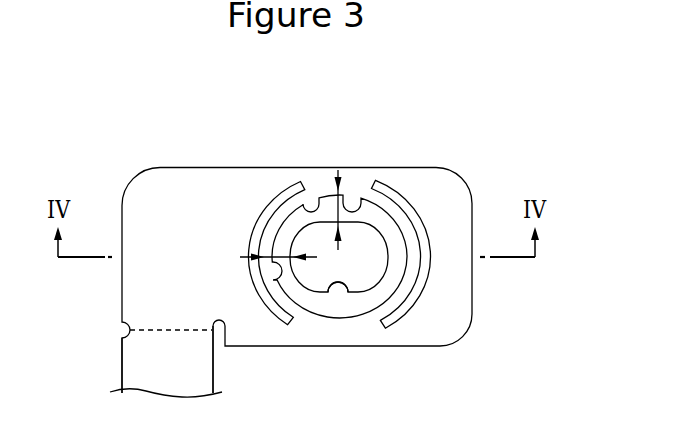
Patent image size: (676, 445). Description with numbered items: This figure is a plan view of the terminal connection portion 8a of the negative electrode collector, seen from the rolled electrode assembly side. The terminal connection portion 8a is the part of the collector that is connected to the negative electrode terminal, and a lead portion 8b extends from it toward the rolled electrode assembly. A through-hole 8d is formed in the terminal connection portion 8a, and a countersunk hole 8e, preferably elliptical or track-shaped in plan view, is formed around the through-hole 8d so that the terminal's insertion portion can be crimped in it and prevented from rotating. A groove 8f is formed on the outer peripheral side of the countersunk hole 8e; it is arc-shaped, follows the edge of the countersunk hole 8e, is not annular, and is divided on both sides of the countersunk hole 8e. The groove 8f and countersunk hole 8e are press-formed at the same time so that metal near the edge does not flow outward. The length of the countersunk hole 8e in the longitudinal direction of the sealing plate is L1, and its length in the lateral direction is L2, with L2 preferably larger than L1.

The terminal connection portion 8a is at (200, 190).
The lead portion 8b is at (195, 373).
The through-hole 8d is at (327, 287).
The countersunk hole 8e is at (320, 203).
The groove 8f is at (275, 195).
The length of the countersunk hole in the longitudinal direction of the sealing plat L1 is at (272, 279).
The length of the countersunk hole in the lateral direction of the sealing plate L2 is at (357, 197).